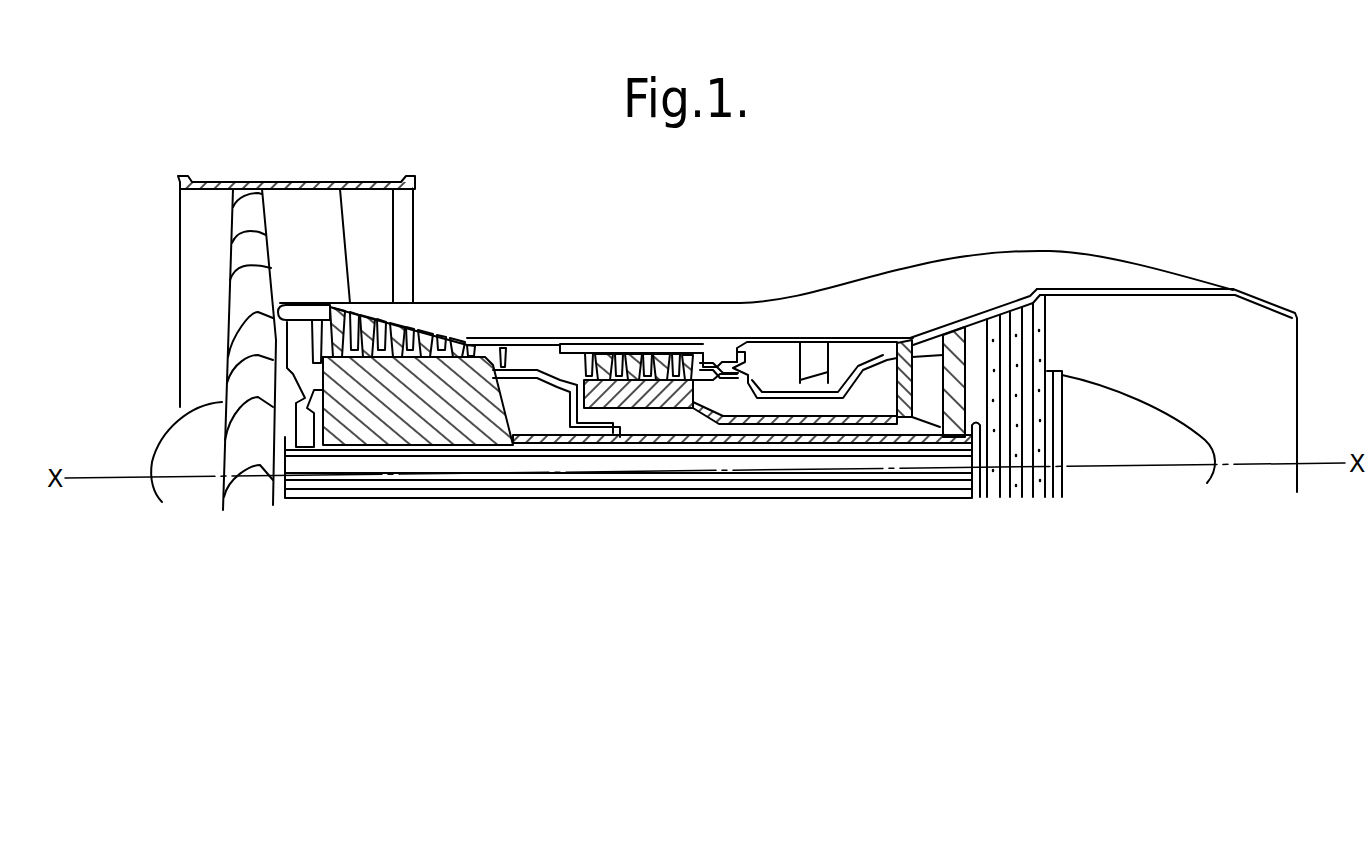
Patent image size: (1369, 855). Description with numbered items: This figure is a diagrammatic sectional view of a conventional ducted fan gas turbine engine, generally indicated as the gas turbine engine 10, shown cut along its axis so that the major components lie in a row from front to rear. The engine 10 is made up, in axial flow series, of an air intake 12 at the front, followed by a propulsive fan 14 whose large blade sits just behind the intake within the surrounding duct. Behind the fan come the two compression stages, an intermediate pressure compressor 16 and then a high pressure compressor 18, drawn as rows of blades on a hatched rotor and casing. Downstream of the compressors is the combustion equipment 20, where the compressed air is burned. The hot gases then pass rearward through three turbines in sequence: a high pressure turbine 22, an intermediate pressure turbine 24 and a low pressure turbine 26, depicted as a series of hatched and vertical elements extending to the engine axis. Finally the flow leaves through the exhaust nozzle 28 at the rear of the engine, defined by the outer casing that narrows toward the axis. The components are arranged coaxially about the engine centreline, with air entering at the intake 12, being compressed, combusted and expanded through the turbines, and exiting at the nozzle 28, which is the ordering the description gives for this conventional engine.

The gas turbine engine 10 is at (583, 249).
The air intake 12 is at (160, 312).
The propulsive fan 14 is at (253, 222).
The intermediate pressure compressor 16 is at (408, 392).
The high pressure compressor 18 is at (642, 357).
The combustion equipment 20 is at (816, 321).
The high pressure turbine 22 is at (905, 337).
The intermediate pressure turbine 24 is at (958, 322).
The low pressure turbine 26 is at (1010, 352).
The exhaust nozzle 28 is at (1270, 404).